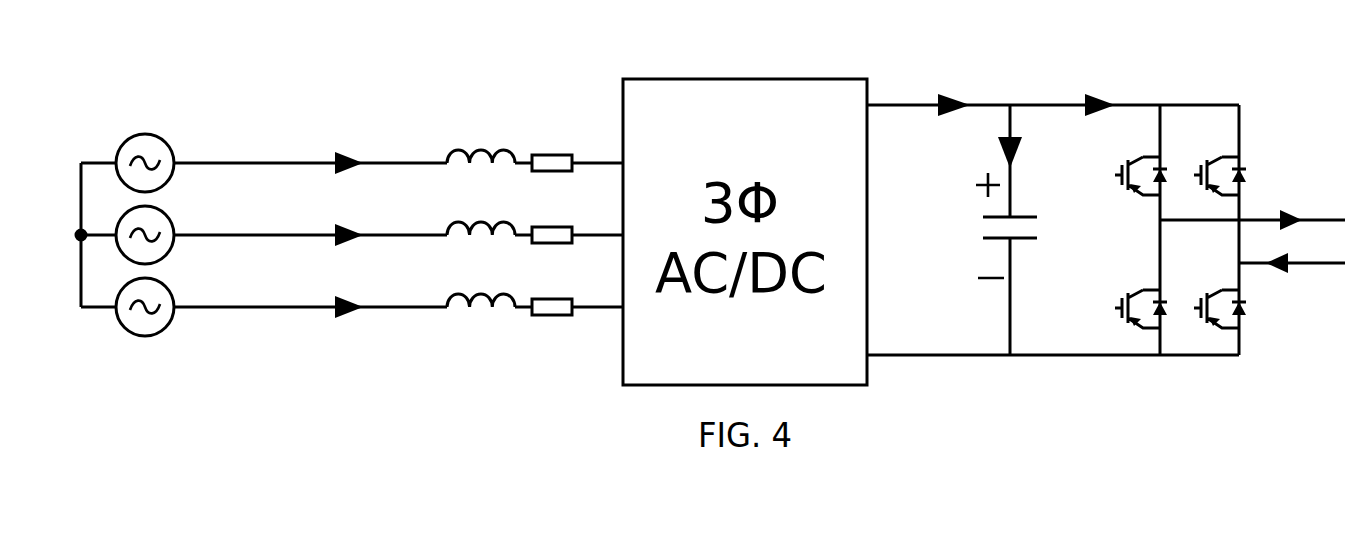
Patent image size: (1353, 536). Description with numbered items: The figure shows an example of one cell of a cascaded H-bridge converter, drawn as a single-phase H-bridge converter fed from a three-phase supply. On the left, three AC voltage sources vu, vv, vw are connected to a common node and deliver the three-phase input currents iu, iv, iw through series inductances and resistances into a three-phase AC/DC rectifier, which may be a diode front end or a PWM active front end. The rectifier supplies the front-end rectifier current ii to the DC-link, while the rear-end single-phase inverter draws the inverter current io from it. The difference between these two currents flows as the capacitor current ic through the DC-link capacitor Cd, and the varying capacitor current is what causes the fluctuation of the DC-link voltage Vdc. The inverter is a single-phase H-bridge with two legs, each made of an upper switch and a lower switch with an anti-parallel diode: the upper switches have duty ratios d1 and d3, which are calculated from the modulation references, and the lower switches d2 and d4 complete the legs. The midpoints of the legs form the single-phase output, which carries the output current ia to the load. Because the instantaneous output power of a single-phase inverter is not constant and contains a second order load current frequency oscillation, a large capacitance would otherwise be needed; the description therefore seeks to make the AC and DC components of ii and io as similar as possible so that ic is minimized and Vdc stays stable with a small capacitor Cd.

The phase u input voltage source vu is at (167, 147).
The phase v input voltage source vv is at (167, 218).
The phase w input voltage source vw is at (169, 289).
The three-phase input current (phase u) iu is at (398, 140).
The three-phase input current (phase v) iv is at (398, 209).
The three-phase input current (phase w) iw is at (398, 281).
The front-end rectifier current ii is at (938, 76).
The rear-end inverter current io is at (1124, 76).
The capacitor current ic is at (1030, 157).
The DC-link voltage Vdc is at (950, 214).
The DC-link capacitor Cd is at (971, 230).
The upper switch duty ratio d1 is at (1134, 159).
The lower switch d2 is at (1134, 293).
The upper switch duty ratio d3 is at (1215, 159).
The lower switch d4 is at (1215, 293).
The output current ia is at (1252, 217).